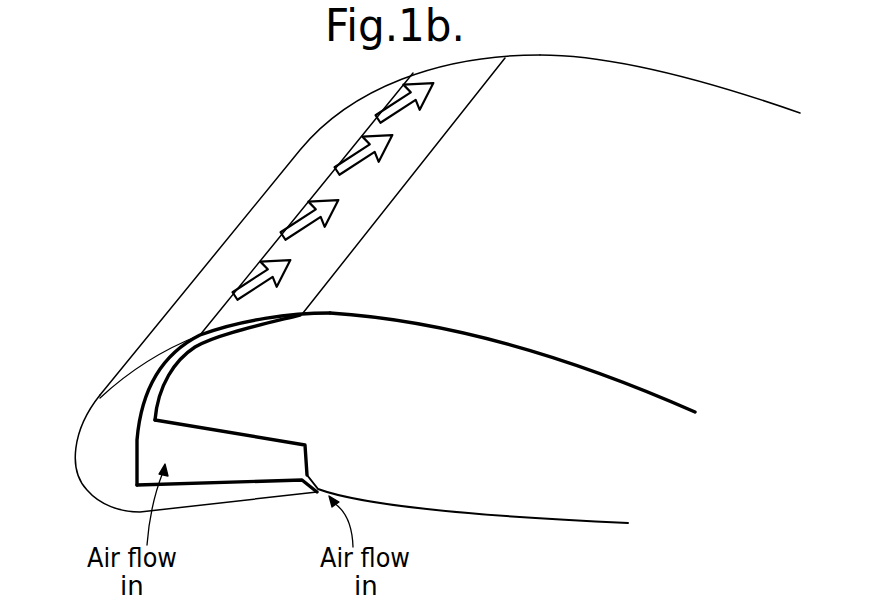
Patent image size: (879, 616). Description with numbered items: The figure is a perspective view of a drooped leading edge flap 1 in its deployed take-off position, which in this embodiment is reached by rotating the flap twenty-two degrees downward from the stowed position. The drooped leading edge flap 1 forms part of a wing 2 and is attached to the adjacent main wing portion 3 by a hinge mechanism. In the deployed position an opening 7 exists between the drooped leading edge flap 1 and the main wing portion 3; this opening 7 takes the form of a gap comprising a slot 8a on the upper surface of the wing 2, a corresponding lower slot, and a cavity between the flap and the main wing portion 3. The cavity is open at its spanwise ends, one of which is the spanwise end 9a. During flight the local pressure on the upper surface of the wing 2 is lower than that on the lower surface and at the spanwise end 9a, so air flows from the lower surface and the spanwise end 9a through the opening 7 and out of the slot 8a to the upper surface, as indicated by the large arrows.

The drooped leading edge flap 1 is at (194, 310).
The wing 2 is at (518, 470).
The main wing portion 3 is at (586, 270).
The opening 7 is at (159, 381).
The slot 8a is at (368, 135).
The spanwise end 9a is at (230, 467).